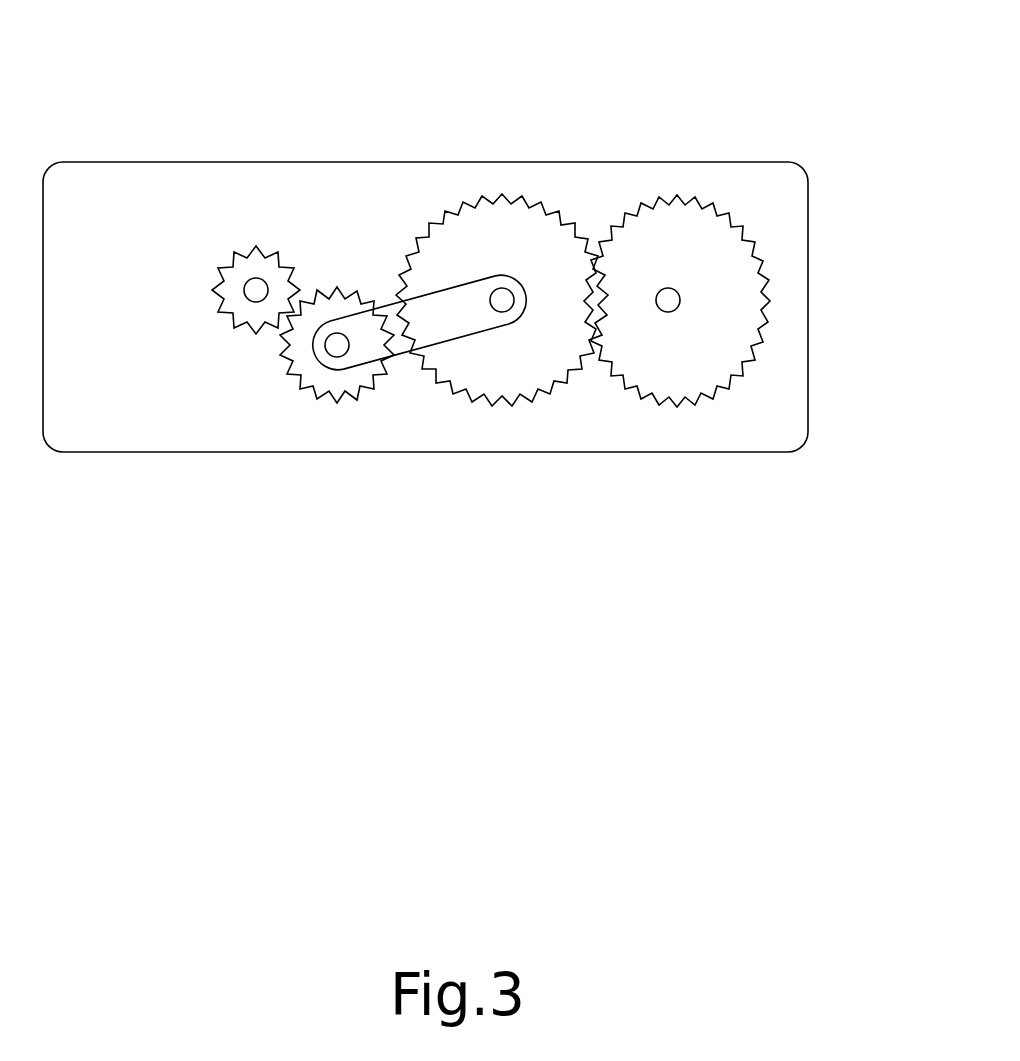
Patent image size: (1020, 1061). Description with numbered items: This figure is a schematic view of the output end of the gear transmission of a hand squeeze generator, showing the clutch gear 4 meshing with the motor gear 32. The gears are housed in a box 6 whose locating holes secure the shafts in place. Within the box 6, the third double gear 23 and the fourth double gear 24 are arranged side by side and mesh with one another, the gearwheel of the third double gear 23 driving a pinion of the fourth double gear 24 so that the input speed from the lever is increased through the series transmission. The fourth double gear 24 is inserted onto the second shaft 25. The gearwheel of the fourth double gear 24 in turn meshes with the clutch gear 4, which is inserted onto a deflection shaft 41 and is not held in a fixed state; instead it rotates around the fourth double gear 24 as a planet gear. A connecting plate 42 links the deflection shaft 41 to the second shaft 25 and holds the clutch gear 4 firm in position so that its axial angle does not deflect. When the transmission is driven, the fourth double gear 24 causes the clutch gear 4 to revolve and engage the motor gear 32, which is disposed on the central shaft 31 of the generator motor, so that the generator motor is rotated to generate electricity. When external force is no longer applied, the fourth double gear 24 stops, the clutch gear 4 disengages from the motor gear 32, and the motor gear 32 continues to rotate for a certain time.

The box 6 is at (805, 218).
The motor gear 32 is at (260, 260).
The central shaft 31 is at (256, 290).
The clutch gear 4 is at (307, 367).
The deflection shaft 41 is at (338, 345).
The connecting plate 42 is at (388, 335).
The fourth double gear 24 is at (483, 225).
The second shaft 25 is at (503, 300).
The third double gear 23 is at (733, 317).